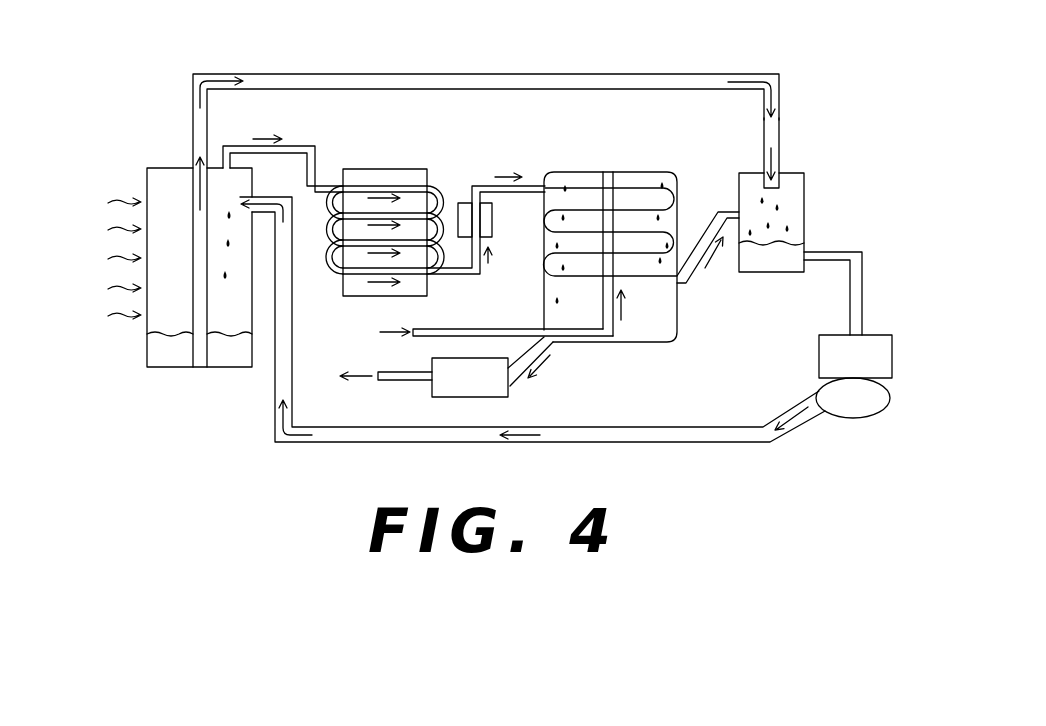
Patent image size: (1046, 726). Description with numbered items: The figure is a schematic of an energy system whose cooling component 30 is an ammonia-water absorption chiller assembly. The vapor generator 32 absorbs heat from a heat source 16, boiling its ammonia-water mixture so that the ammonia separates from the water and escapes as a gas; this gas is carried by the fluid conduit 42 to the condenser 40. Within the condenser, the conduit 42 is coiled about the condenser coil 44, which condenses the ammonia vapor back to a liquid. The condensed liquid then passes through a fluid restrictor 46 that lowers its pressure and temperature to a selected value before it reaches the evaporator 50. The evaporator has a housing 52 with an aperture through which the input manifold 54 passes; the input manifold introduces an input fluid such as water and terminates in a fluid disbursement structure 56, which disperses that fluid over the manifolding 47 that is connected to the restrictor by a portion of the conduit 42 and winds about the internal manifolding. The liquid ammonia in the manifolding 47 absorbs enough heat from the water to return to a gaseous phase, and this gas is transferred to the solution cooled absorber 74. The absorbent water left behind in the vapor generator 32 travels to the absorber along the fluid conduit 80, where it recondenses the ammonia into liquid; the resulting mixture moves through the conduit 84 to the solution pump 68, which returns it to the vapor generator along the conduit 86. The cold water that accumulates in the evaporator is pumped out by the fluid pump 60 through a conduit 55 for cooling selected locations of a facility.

The heat source 16 is at (127, 196).
The cooling component 30 is at (798, 149).
The vapor generator 32 is at (172, 369).
The condenser 40 is at (373, 169).
The fluid conduit 42 is at (290, 146).
The condenser coil 44 is at (433, 182).
The fluid restrictor 46 is at (493, 222).
The manifolding 47 is at (640, 278).
The evaporator 50 is at (612, 249).
The housing 52 is at (645, 342).
The input manifold 54 is at (442, 328).
The condensate outlet pipe 55 is at (597, 342).
The fluid disbursement structure 56 is at (624, 173).
The fluid pump 60 is at (509, 386).
The solution pump 68 is at (893, 383).
The solution cooled absorber 74 is at (805, 212).
The fluid conduit 80 is at (388, 74).
The conduit 84 is at (862, 278).
The conduit 86 is at (427, 443).